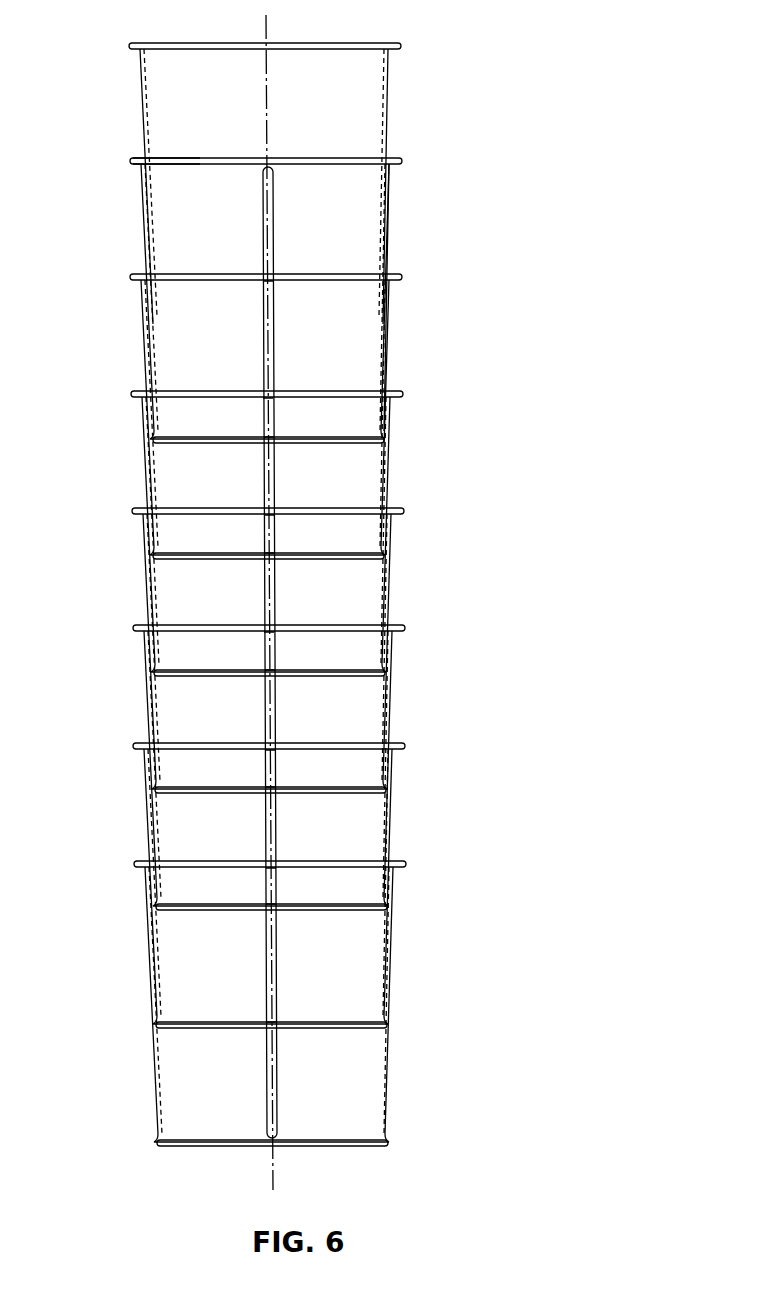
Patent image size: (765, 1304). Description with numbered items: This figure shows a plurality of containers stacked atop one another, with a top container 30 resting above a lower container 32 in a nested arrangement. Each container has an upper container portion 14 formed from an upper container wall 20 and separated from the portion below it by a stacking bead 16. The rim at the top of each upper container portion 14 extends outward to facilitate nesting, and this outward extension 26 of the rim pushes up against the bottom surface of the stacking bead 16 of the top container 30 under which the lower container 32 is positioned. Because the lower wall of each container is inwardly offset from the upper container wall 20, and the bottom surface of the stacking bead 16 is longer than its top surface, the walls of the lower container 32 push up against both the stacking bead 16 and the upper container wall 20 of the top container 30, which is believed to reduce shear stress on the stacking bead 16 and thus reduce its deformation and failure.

The upper container portion 14 is at (142, 173).
The stacking bead 16 is at (134, 160).
The upper container wall 20 is at (144, 188).
The outward extension of the rim 26 is at (136, 162).
The top container 30 is at (373, 100).
The lower container 32 is at (373, 227).